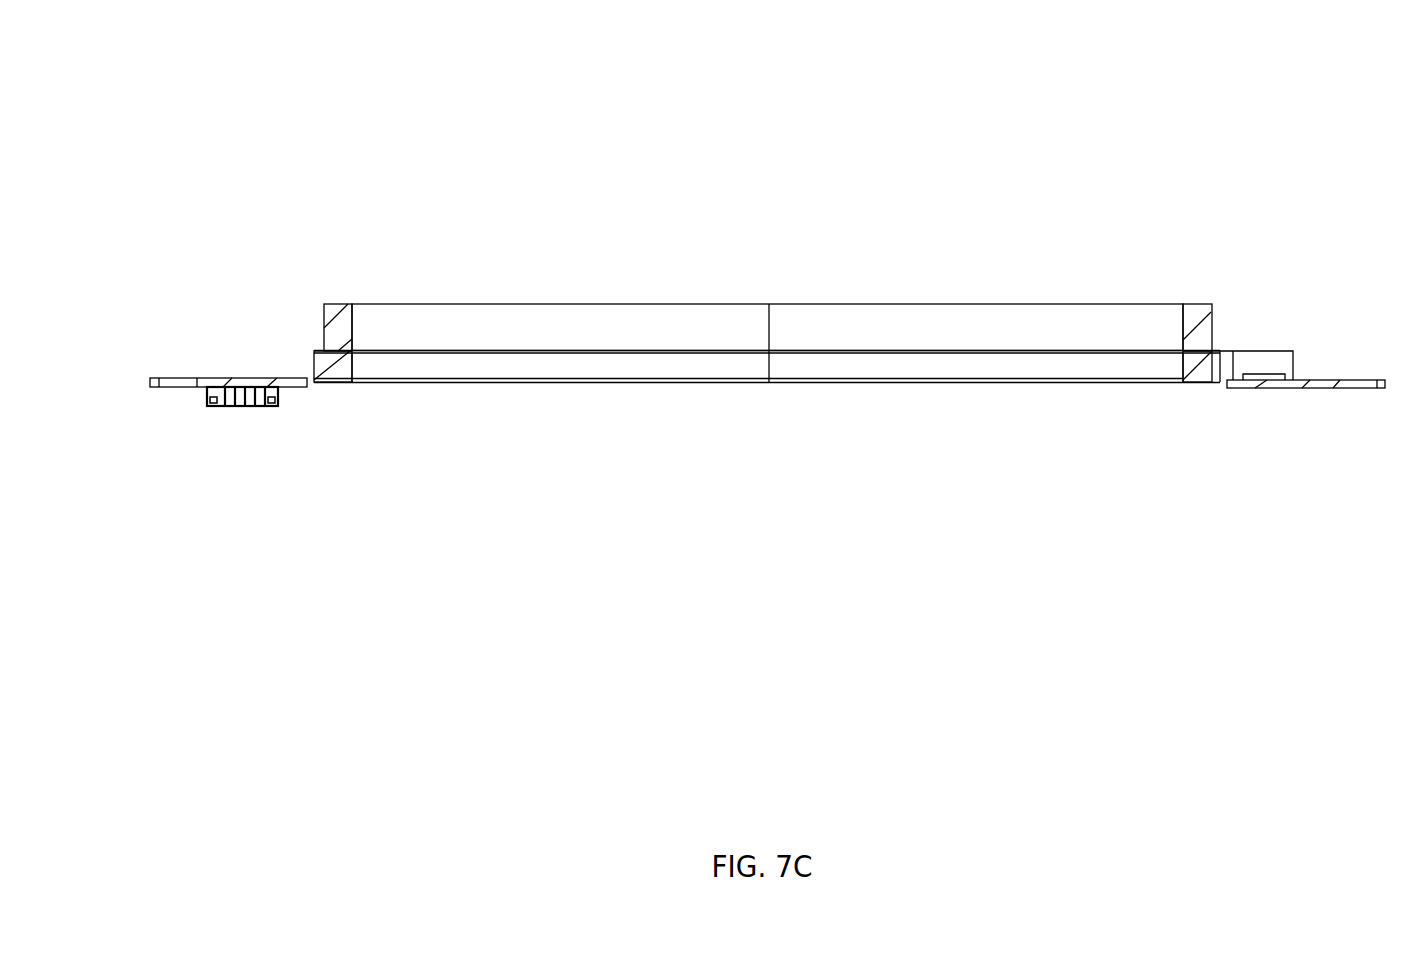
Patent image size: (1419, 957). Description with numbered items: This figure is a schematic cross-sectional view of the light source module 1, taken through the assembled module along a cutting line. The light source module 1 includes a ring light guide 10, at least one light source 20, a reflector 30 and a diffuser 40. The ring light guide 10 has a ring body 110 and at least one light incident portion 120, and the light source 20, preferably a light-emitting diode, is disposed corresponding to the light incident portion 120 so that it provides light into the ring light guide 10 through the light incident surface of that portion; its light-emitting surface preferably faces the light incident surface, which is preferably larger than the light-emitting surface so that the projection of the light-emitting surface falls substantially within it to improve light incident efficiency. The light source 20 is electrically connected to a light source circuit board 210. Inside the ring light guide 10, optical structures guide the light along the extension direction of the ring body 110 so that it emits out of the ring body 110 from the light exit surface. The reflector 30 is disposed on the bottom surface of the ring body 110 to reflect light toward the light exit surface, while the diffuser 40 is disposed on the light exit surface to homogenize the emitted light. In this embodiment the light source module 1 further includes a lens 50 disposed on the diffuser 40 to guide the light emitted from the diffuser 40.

The light source module 1 is at (266, 72).
The ring light guide 10 is at (298, 362).
The light source 20 is at (1262, 362).
The reflector 30 is at (957, 380).
The diffuser 40 is at (1028, 351).
The lens 50 is at (1083, 323).
The ring body 110 is at (1000, 365).
The light incident portion 120 is at (1211, 362).
The light source circuit board 210 is at (177, 382).